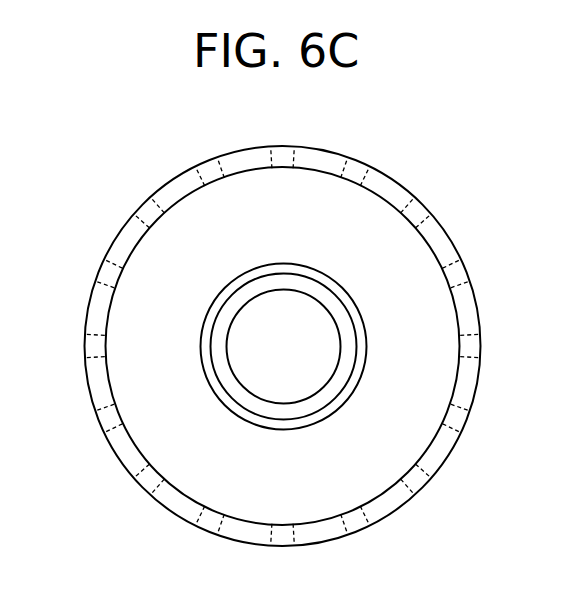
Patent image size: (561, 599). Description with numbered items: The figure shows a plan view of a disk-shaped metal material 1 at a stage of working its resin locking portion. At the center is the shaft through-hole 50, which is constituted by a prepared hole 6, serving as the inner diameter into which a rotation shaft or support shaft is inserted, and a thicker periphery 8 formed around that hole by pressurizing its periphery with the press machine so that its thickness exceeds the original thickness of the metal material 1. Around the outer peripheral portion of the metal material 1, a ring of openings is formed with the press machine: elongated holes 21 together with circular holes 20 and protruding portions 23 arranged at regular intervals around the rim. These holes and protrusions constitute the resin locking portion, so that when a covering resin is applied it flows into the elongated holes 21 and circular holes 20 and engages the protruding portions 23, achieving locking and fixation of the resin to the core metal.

The disk-shaped metal material 1 is at (405, 263).
The prepared hole 6 is at (308, 318).
The thicker periphery 8 is at (305, 288).
The circular holes 20 is at (467, 268).
The elongated holes 21 is at (475, 347).
The protruding portions 23 is at (468, 382).
The shaft through-hole 50 is at (317, 260).